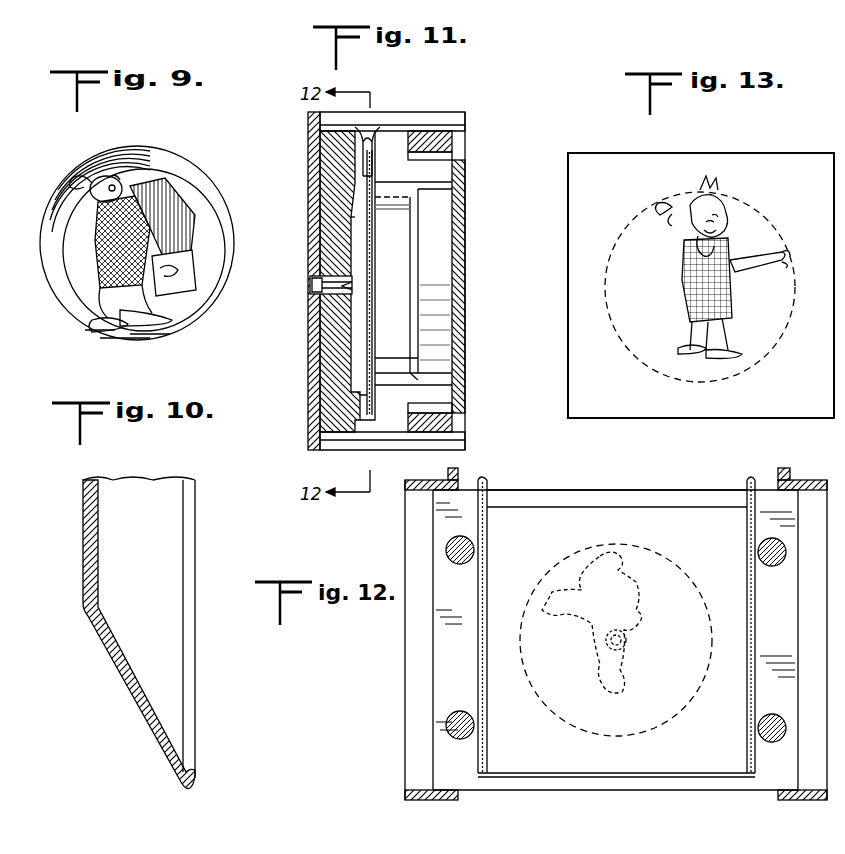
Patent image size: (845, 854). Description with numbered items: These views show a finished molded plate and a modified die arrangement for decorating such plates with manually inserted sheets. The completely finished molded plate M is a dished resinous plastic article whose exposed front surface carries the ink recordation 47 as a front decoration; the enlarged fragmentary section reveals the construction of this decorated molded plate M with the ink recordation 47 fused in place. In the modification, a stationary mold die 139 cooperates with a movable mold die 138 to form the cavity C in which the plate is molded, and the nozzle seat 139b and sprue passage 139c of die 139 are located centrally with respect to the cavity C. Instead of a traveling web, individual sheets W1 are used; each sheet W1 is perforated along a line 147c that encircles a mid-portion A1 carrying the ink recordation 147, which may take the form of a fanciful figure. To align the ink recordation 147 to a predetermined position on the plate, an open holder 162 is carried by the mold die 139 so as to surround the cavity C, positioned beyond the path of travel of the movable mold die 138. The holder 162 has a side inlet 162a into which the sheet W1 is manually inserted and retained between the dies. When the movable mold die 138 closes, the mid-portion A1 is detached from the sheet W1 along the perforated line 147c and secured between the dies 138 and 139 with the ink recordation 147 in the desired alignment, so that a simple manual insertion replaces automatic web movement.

In FIG. 9, the molded plate M is at (66, 168).
In FIG. 10, the molded plate M is at (88, 550).
In FIG. 9, the ink recordation 47 is at (170, 192).
In FIG. 10, the ink recordation 47 is at (98, 562).
In FIG. 11, the stationary mold die 139 is at (335, 162).
In FIG. 12, the stationary mold die 139 is at (445, 686).
In FIG. 11, the nozzle seat 139b is at (310, 286).
In FIG. 11, the sprue passage 139c is at (344, 286).
In FIG. 12, the sprue passage 139c is at (640, 634).
In FIG. 11, the cavity C is at (357, 230).
In FIG. 11, the sheet W1 is at (368, 252).
In FIG. 13, the sheet W1 is at (596, 152).
In FIG. 11, the holder 162 is at (373, 262).
In FIG. 12, the holder 162 is at (488, 533).
In FIG. 11, the side inlet 162a is at (372, 126).
In FIG. 12, the side inlet 162a is at (484, 482).
In FIG. 11, the movable mold die 138 is at (438, 216).
In FIG. 12, the ink recordation 147 is at (690, 586).
In FIG. 13, the ink recordation 147 is at (666, 330).
In FIG. 12, the perforated line 147c is at (548, 580).
In FIG. 13, the perforated line 147c is at (622, 232).
In FIG. 13, the mid-portion A1 is at (738, 224).